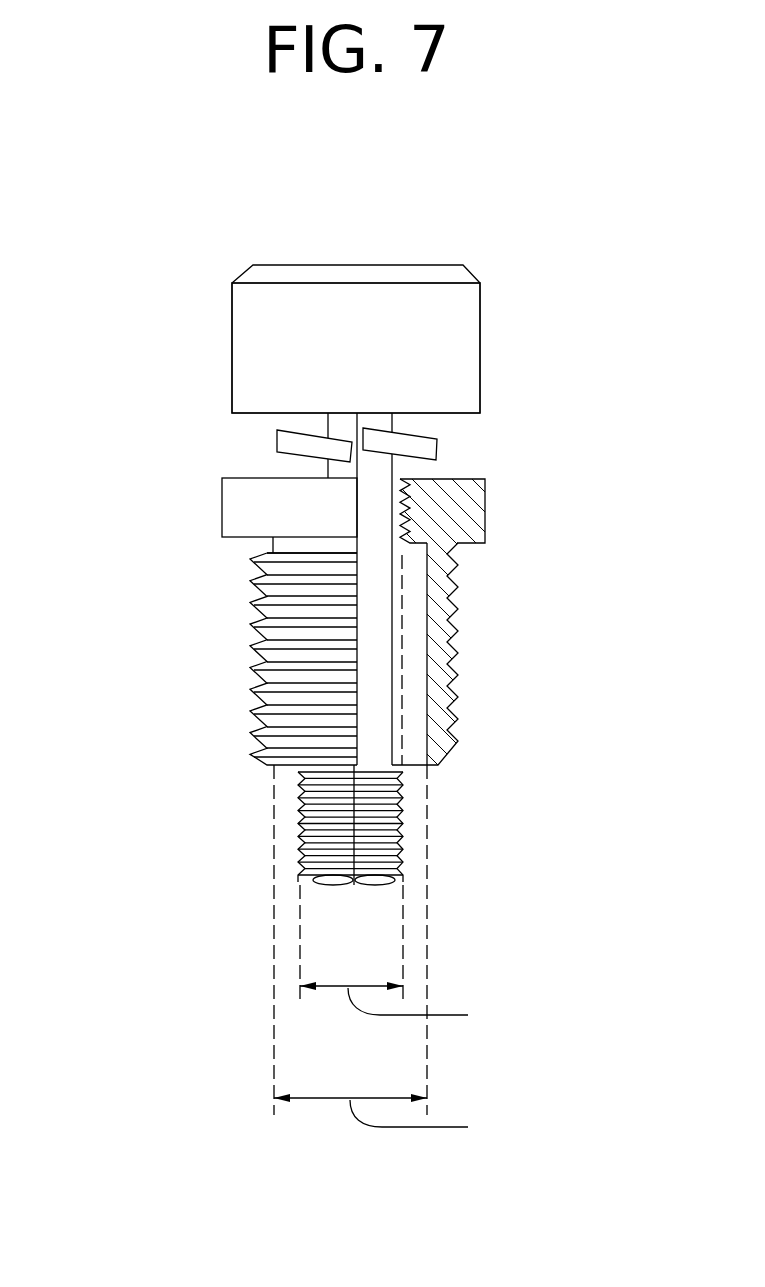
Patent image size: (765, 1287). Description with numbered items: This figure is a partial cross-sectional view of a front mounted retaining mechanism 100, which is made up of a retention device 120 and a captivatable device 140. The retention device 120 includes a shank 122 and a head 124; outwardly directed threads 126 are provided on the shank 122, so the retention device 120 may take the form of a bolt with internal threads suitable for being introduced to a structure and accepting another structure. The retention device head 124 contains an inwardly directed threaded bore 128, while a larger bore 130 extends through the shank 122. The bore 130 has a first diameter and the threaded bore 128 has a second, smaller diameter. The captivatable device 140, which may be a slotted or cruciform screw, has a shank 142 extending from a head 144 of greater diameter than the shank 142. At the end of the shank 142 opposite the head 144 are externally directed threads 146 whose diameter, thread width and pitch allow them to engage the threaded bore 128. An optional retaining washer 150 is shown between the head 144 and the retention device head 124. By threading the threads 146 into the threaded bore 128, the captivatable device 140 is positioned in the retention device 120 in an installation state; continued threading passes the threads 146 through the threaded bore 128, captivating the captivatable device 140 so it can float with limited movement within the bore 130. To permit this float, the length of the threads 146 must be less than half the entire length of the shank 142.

The front mounted retaining mechanism 100 is at (177, 253).
The retention device 120 is at (243, 513).
The shank 122 is at (300, 544).
The head 124 is at (277, 495).
The outwardly directed threads 126 is at (277, 670).
The threaded bore 128 is at (407, 519).
The bore 130 is at (412, 716).
The captivatable device 140 is at (440, 279).
The shank 142 is at (377, 607).
The head 144 is at (460, 335).
The externally directed threads 146 is at (308, 840).
The retaining washer 150 is at (427, 447).